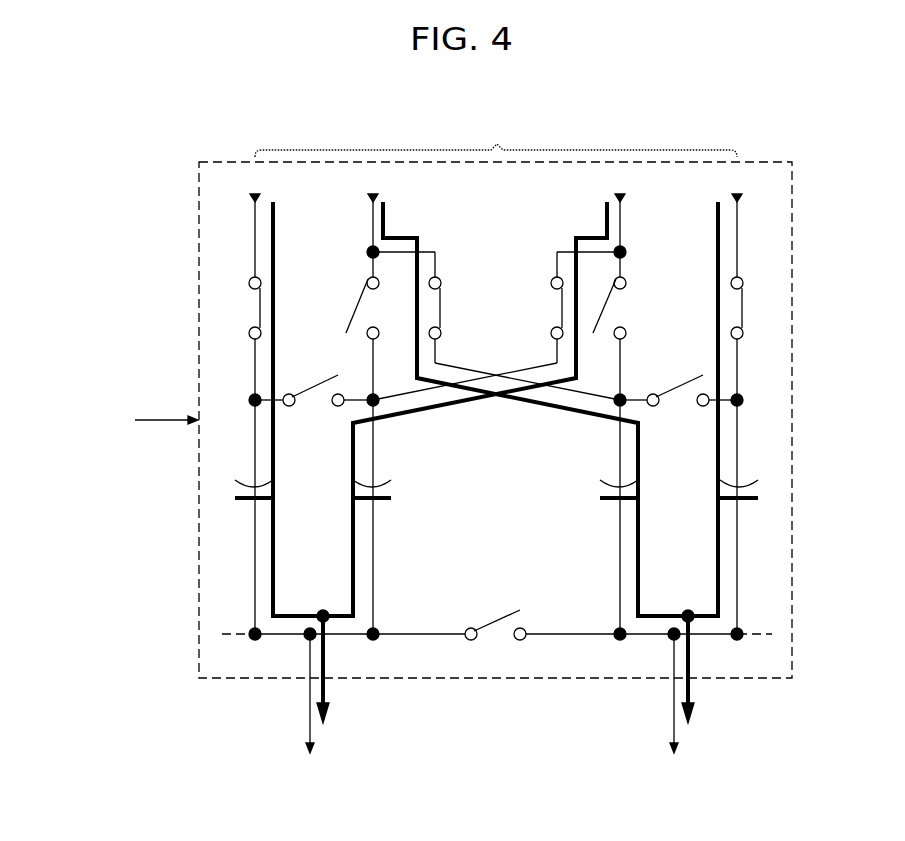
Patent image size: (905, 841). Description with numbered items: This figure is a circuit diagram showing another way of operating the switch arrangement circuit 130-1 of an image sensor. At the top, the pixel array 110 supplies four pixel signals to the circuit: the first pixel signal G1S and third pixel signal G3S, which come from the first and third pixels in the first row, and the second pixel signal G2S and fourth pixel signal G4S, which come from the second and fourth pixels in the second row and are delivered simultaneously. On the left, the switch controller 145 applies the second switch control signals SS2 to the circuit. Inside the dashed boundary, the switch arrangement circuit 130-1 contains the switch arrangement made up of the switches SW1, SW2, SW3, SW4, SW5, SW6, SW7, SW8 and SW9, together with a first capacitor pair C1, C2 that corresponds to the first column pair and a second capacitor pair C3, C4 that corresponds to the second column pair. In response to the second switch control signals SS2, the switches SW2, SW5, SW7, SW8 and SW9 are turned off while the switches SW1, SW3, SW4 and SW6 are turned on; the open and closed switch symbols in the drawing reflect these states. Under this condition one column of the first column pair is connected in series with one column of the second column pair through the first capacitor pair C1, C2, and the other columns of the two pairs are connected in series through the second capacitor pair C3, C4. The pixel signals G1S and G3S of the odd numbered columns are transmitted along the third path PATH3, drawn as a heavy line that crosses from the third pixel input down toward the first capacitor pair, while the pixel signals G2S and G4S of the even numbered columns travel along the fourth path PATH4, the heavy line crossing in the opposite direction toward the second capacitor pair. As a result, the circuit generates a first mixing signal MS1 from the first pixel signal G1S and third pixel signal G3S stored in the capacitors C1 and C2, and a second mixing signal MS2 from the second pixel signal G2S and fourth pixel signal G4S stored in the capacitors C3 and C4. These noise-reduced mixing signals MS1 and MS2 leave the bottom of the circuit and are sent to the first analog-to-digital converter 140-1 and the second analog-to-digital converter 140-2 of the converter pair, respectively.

The switch arrangement circuit 130-1 is at (795, 418).
The pixel array 110 is at (496, 140).
The switch controller 145 is at (85, 421).
The second switch control signals SS2 is at (166, 411).
The first pixel signal G1S is at (255, 402).
The second pixel signal G2S is at (395, 402).
The third pixel signal G3S is at (598, 402).
The fourth pixel signal G4S is at (738, 402).
The third path PATH3 is at (603, 221).
The fourth path PATH4 is at (387, 221).
The switch SW1 is at (234, 308).
The switch SW2 is at (344, 308).
The switch SW3 is at (458, 308).
The switch SW4 is at (537, 308).
The switch SW5 is at (631, 308).
The switch SW6 is at (760, 308).
The switch SW7 is at (314, 403).
The switch SW8 is at (678, 403).
The switch SW9 is at (495, 638).
The first capacitor C1 is at (240, 492).
The second capacitor C2 is at (387, 492).
The third capacitor C3 is at (605, 492).
The fourth capacitor C4 is at (753, 492).
The first mixing signal MS1 is at (343, 671).
The second mixing signal MS2 is at (708, 671).
The first analog-to-digital converter 140-1 is at (306, 710).
The second analog-to-digital converter 140-2 is at (671, 710).